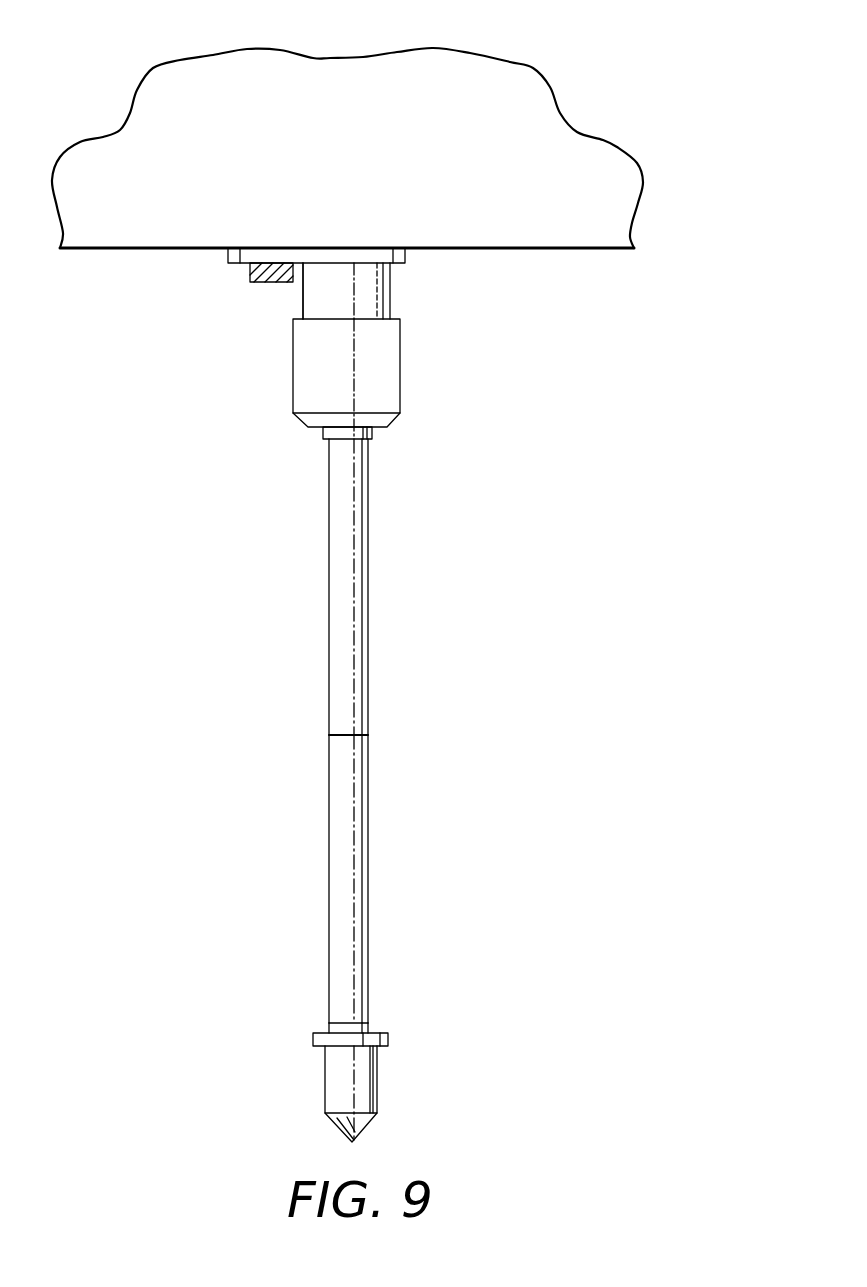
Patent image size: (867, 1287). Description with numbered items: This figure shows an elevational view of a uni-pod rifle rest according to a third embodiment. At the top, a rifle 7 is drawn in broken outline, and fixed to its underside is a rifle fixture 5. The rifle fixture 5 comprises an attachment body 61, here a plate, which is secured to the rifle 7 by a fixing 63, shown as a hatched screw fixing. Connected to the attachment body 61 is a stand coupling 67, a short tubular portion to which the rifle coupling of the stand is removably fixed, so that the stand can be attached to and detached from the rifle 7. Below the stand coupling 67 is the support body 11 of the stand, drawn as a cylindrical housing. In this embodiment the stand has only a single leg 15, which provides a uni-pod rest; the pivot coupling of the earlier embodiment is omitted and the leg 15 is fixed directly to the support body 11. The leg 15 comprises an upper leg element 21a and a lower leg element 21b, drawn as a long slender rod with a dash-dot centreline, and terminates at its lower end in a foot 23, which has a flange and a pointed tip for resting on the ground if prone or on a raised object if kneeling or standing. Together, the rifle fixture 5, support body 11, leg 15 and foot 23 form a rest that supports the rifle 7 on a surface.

The rifle 7 is at (528, 74).
The attachment body 61 is at (228, 257).
The fixing 63 is at (250, 273).
The stand coupling 67 is at (303, 302).
The rifle fixture 5 is at (353, 291).
The support body 11 is at (421, 346).
The leg 15 is at (390, 731).
The leg element 21a is at (359, 546).
The leg element 21b is at (360, 883).
The foot 23 is at (388, 1078).